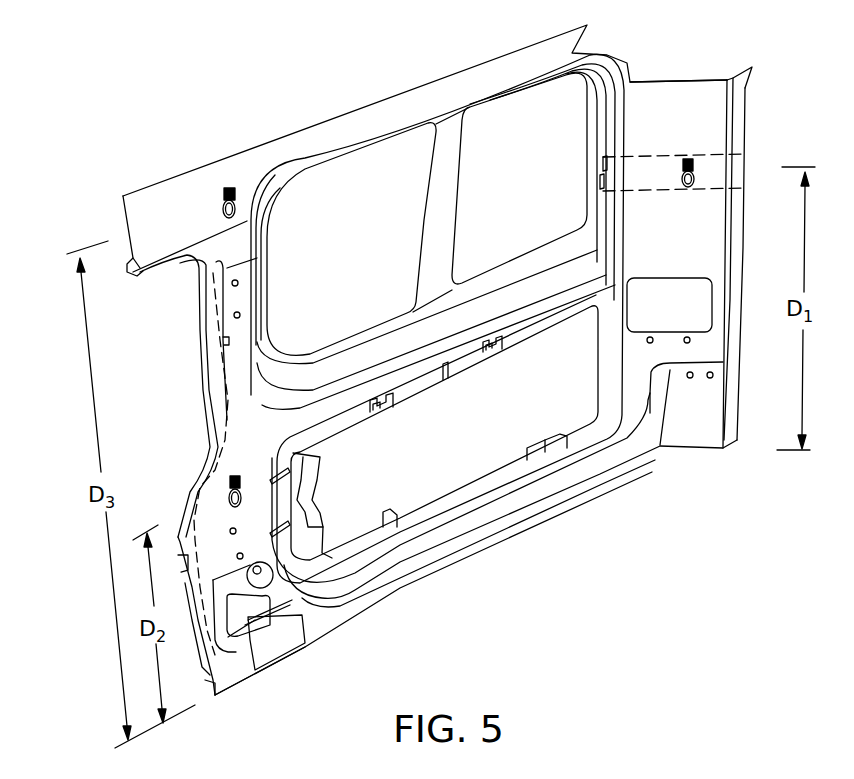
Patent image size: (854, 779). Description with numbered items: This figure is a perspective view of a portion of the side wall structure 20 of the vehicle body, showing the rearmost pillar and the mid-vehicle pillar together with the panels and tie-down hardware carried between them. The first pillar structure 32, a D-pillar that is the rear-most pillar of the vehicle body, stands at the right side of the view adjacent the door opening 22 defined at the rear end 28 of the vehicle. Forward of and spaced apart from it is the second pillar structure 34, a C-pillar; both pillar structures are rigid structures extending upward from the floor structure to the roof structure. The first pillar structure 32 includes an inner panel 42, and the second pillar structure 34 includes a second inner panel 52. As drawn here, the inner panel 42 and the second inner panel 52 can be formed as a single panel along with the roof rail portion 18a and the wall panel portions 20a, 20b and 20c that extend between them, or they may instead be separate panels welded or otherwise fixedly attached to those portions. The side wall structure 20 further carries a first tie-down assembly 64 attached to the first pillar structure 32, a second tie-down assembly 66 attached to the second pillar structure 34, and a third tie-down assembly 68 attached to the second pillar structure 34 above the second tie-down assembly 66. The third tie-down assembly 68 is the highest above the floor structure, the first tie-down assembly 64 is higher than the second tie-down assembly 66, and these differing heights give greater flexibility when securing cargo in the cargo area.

The side wall structure 20 is at (282, 107).
The roof rail portion 18a is at (367, 118).
The wall panel portion 20a is at (520, 117).
The first pillar structure 32 is at (657, 108).
The inner panel 42 is at (710, 143).
The first tie-down assembly 64 is at (682, 178).
The door opening 22 is at (733, 222).
The rear end 28 is at (743, 320).
The third tie-down assembly 68 is at (222, 199).
The second inner panel 52 is at (237, 370).
The second pillar structure 34 is at (240, 410).
The second tie-down assembly 66 is at (227, 483).
The wall panel portion 20b is at (517, 317).
The wall panel portion 20c is at (475, 518).